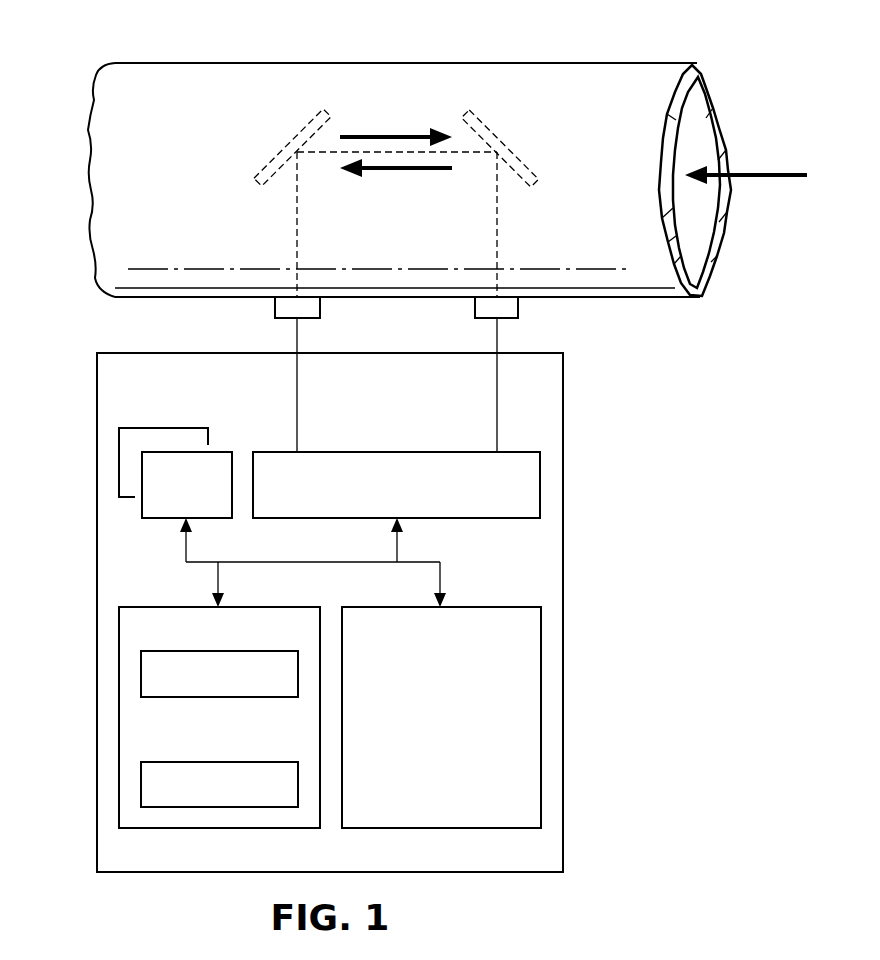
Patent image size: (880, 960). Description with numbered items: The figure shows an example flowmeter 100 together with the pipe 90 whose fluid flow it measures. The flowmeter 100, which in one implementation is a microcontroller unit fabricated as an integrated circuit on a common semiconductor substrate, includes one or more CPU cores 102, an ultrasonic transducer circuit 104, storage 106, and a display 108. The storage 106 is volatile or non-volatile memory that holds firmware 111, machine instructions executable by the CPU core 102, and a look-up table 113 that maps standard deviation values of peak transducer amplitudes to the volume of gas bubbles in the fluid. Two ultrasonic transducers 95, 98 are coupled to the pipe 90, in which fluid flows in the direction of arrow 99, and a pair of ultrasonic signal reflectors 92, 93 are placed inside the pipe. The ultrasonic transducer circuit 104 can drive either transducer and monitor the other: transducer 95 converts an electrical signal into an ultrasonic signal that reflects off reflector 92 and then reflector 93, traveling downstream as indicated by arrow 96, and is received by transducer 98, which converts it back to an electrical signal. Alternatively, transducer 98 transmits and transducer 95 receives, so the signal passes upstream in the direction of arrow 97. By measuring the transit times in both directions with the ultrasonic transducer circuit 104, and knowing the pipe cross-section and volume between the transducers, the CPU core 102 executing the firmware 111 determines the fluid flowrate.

The pipe 90 is at (335, 58).
The ultrasonic signal reflector 92 is at (500, 137).
The ultrasonic signal reflector 93 is at (293, 137).
The ultrasonic transducer 95 is at (520, 307).
The arrow 96 is at (398, 175).
The arrow 97 is at (398, 131).
The ultrasonic transducer 98 is at (273, 307).
The arrow 99 is at (772, 175).
The flowmeter 100 is at (88, 633).
The CPU core 102 is at (158, 418).
The ultrasonic transducer circuit 104 is at (407, 452).
The storage 106 is at (158, 596).
The display 108 is at (422, 747).
The firmware 111 is at (197, 697).
The look-up table 113 is at (242, 762).